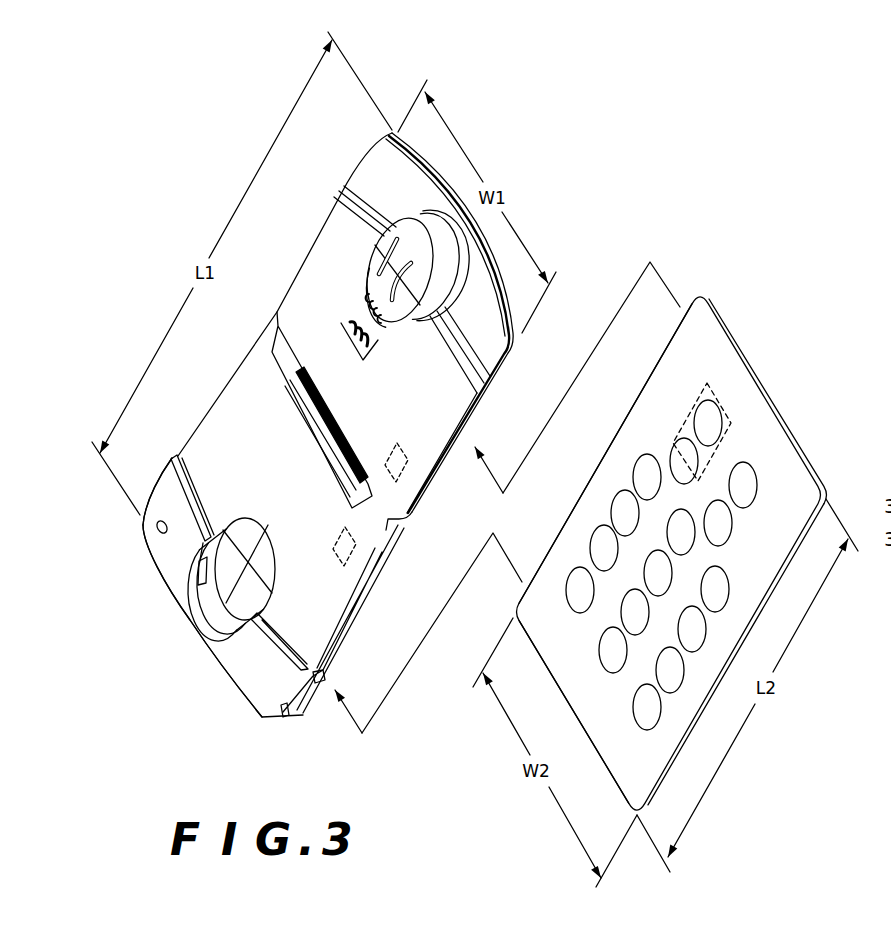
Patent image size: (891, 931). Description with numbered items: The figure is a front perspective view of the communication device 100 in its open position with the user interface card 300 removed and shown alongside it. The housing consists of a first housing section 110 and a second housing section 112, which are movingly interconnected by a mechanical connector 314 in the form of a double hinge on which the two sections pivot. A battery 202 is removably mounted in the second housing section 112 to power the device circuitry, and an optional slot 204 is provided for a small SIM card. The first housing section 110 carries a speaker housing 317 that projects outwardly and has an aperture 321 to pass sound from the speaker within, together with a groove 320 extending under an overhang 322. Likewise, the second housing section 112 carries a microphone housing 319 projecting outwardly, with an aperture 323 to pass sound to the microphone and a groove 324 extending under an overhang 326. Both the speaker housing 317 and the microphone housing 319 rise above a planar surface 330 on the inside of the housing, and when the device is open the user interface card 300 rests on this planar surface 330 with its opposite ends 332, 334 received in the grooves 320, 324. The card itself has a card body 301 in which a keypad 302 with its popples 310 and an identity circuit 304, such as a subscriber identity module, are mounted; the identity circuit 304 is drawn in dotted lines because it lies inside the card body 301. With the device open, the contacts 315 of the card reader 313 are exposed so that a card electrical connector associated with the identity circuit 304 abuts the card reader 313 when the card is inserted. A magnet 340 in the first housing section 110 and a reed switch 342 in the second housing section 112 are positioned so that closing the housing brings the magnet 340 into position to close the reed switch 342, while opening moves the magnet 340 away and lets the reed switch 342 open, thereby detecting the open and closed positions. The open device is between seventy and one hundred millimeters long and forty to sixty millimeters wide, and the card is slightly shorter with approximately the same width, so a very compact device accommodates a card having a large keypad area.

The communication device 100 is at (193, 426).
The first housing section 110 is at (515, 318).
The second housing section 112 is at (232, 693).
The battery 202 is at (355, 613).
The slot 204 is at (300, 707).
The user interface card 300 is at (804, 489).
The card body 301 is at (717, 337).
The keypad 302 is at (580, 634).
The identity circuit 304 is at (708, 393).
The popples 310 is at (634, 473).
The card reader 313 is at (367, 313).
The mechanical connector 314 is at (365, 450).
The contacts 315 is at (340, 337).
The speaker housing 317 is at (444, 267).
The microphone housing 319 is at (165, 550).
The groove 320 is at (430, 316).
The aperture 321 is at (394, 240).
The overhang 322 is at (378, 260).
The aperture 323 is at (166, 522).
The groove 324 is at (203, 562).
The overhang 326 is at (158, 498).
The planar surface 330 is at (340, 398).
The end 332 is at (775, 436).
The end 334 is at (615, 745).
The magnet 340 is at (398, 468).
The reed switch 342 is at (350, 543).